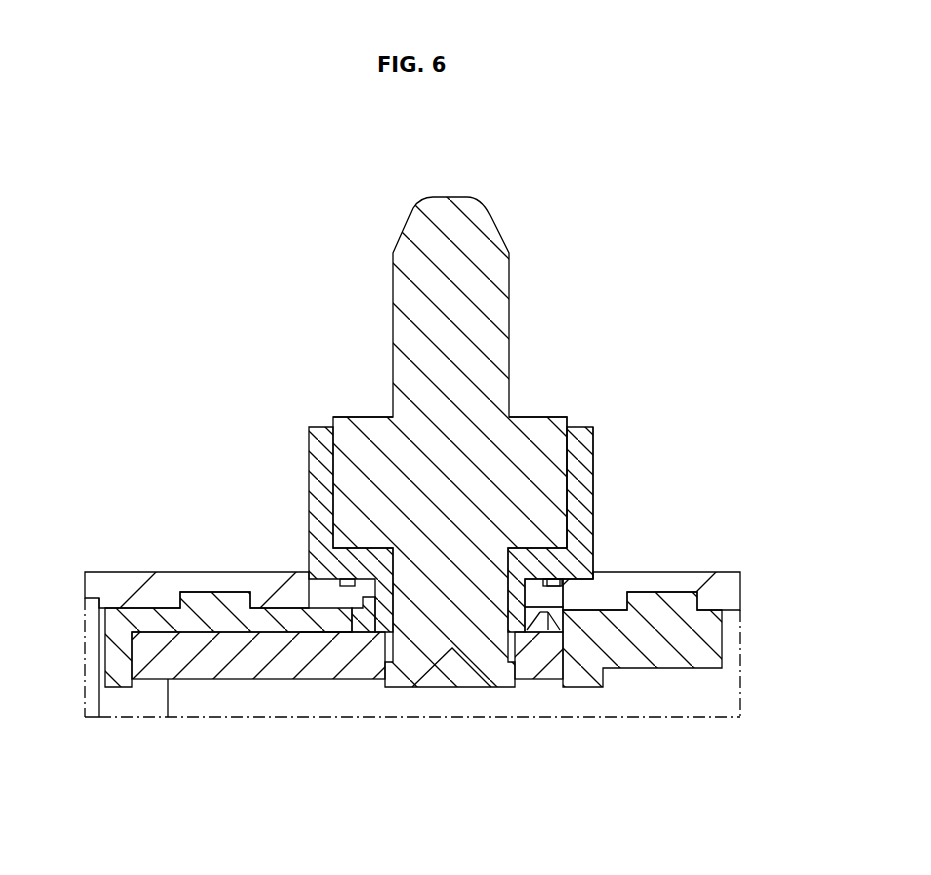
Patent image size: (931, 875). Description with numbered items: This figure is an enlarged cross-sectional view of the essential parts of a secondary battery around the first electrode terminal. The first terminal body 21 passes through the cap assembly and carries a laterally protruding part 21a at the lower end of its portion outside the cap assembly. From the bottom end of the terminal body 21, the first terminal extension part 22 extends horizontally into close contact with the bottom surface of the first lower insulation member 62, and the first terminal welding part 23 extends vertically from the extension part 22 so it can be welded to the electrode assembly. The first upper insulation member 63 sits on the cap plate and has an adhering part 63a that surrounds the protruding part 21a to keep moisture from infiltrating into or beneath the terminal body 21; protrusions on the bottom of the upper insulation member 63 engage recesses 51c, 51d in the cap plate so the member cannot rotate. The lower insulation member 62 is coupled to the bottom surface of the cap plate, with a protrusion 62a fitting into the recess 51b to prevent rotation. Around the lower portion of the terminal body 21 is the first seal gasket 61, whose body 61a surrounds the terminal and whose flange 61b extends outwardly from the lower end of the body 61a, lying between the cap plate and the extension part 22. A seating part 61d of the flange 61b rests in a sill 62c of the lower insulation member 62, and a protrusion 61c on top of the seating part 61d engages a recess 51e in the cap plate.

The first terminal body 21 is at (483, 222).
The protruding part 21a is at (535, 423).
The first terminal extension part 22 is at (252, 664).
The first terminal welding part 23 is at (143, 695).
The recess 51b is at (660, 585).
The recess 51c is at (593, 593).
The recess 51d is at (300, 590).
The recess 51e is at (357, 598).
The first seal gasket 61 is at (512, 727).
The body 61a is at (527, 631).
The flange 61b is at (543, 607).
The protrusion 61c is at (548, 618).
The seating part 61d is at (588, 705).
The first lower insulation member 62 is at (660, 658).
The base member protrusion 62a is at (205, 596).
The sill 62c is at (353, 632).
The first upper insulation member 63 is at (565, 555).
The adhering part 63a is at (585, 438).